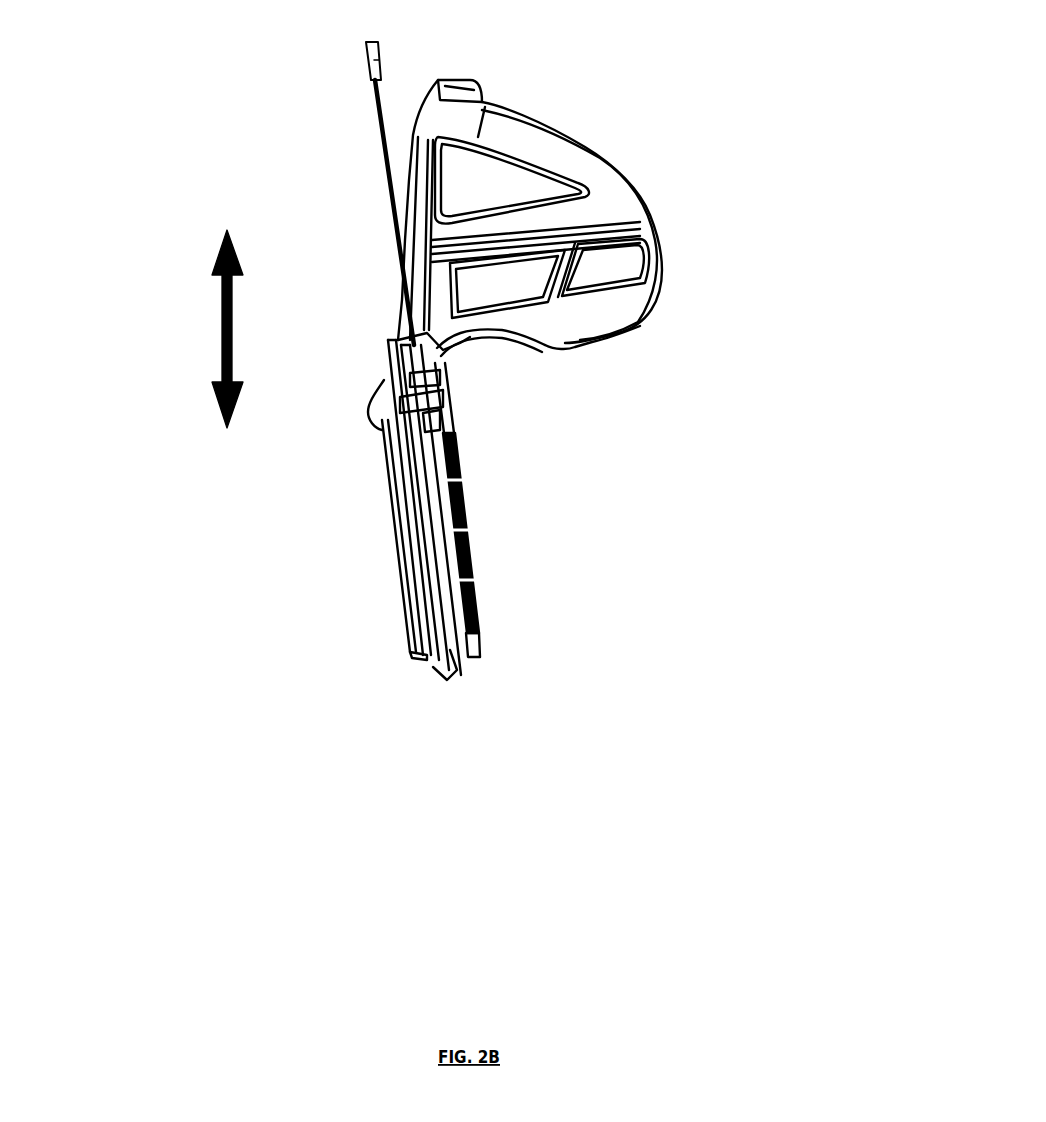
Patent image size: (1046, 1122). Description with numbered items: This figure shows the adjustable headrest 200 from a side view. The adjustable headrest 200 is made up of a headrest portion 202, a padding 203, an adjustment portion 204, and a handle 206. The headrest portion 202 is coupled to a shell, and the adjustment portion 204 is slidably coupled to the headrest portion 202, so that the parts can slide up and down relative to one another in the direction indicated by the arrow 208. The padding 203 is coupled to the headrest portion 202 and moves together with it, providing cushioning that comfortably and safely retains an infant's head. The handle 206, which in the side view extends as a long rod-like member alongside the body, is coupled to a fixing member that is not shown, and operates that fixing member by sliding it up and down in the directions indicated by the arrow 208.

The adjustable headrest 200 is at (733, 677).
The headrest portion 202 is at (462, 522).
The padding 203 is at (632, 193).
The adjustment portion 204 is at (385, 490).
The handle 206 is at (370, 62).
The arrow 208 is at (222, 363).